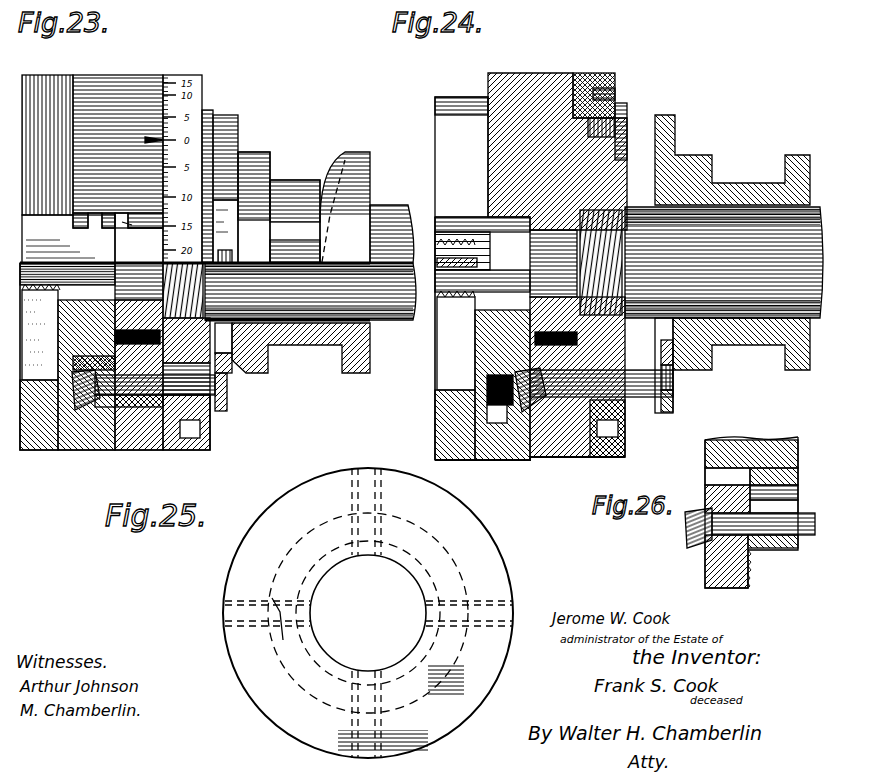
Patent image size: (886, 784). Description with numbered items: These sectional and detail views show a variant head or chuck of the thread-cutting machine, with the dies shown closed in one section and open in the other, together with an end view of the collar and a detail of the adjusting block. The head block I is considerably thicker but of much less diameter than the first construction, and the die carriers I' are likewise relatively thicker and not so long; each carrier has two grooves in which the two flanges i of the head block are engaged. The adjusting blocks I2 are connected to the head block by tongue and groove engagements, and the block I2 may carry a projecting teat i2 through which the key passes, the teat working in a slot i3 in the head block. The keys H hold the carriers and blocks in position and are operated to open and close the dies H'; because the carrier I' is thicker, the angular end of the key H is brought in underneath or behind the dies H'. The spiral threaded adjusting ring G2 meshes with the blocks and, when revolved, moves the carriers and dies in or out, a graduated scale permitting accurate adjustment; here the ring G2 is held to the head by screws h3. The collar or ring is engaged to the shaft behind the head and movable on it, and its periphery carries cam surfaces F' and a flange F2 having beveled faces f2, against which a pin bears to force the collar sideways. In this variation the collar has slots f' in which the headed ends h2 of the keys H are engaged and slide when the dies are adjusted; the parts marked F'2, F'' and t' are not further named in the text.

In FIG. 23, the head block I is at (292, 384).
In FIG. 24, the head block I is at (564, 236).
In FIG. 26, the head block I is at (751, 441).
In FIG. 23, the die carrier I' is at (67, 347).
In FIG. 24, the die carrier I' is at (470, 329).
In FIG. 23, the adjusting block I2 is at (143, 462).
In FIG. 24, the adjusting block I2 is at (556, 433).
In FIG. 26, the adjusting block I2 is at (750, 570).
In FIG. 23, the flange i is at (118, 208).
In FIG. 26, the projecting teat i2 is at (797, 506).
In FIG. 26, the slot i3 is at (783, 494).
In FIG. 23, the cam surface F' is at (279, 182).
In FIG. 24, the cam surface F' is at (732, 160).
In FIG. 23, the flange F2 is at (348, 160).
In FIG. 23, the collar flange F'2 is at (392, 234).
In FIG. 24, the collar flange F'2 is at (747, 243).
In FIG. 25, the collar face F'' is at (360, 701).
In FIG. 24, the slot f' is at (679, 365).
In FIG. 25, the slot f' is at (267, 601).
In FIG. 23, the beveled face f2 is at (308, 205).
In FIG. 24, the adjusting ring G2 is at (598, 73).
In FIG. 23, the key H is at (143, 383).
In FIG. 24, the key H is at (594, 420).
In FIG. 26, the key H is at (733, 528).
In FIG. 23, the die H' is at (41, 332).
In FIG. 24, the die H' is at (457, 314).
In FIG. 24, the headed end h2 is at (667, 413).
In FIG. 24, the screw h3 is at (622, 118).
In FIG. 25, the slot t' is at (476, 588).